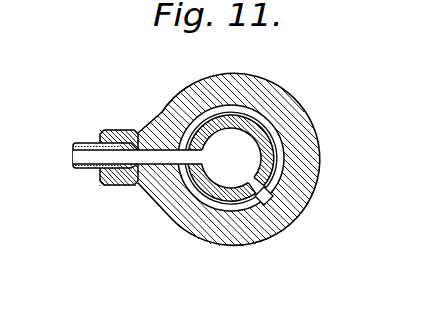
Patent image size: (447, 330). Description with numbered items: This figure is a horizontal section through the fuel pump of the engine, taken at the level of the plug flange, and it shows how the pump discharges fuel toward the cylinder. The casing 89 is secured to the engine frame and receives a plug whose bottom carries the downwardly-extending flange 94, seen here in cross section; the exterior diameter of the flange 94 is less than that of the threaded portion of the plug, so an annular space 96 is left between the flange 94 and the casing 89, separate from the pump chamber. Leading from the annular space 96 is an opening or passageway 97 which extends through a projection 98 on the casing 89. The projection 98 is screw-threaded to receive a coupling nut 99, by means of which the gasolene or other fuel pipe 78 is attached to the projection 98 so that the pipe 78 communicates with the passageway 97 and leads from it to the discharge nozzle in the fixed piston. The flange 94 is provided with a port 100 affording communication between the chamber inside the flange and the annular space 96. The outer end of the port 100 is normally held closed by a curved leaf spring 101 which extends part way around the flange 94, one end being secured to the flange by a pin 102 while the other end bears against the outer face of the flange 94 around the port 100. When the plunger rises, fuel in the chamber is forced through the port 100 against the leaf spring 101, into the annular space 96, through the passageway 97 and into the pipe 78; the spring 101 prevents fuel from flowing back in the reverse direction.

The fuel supply pipe 78 is at (82, 168).
The casing 89 is at (312, 189).
The flange 94 is at (266, 157).
The annular space 96 is at (265, 118).
The passageway 97 is at (147, 170).
The projection 98 is at (132, 146).
The coupling nut 99 is at (103, 130).
The port 100 is at (203, 158).
The curved leaf spring 101 is at (276, 142).
The pin 102 is at (265, 205).